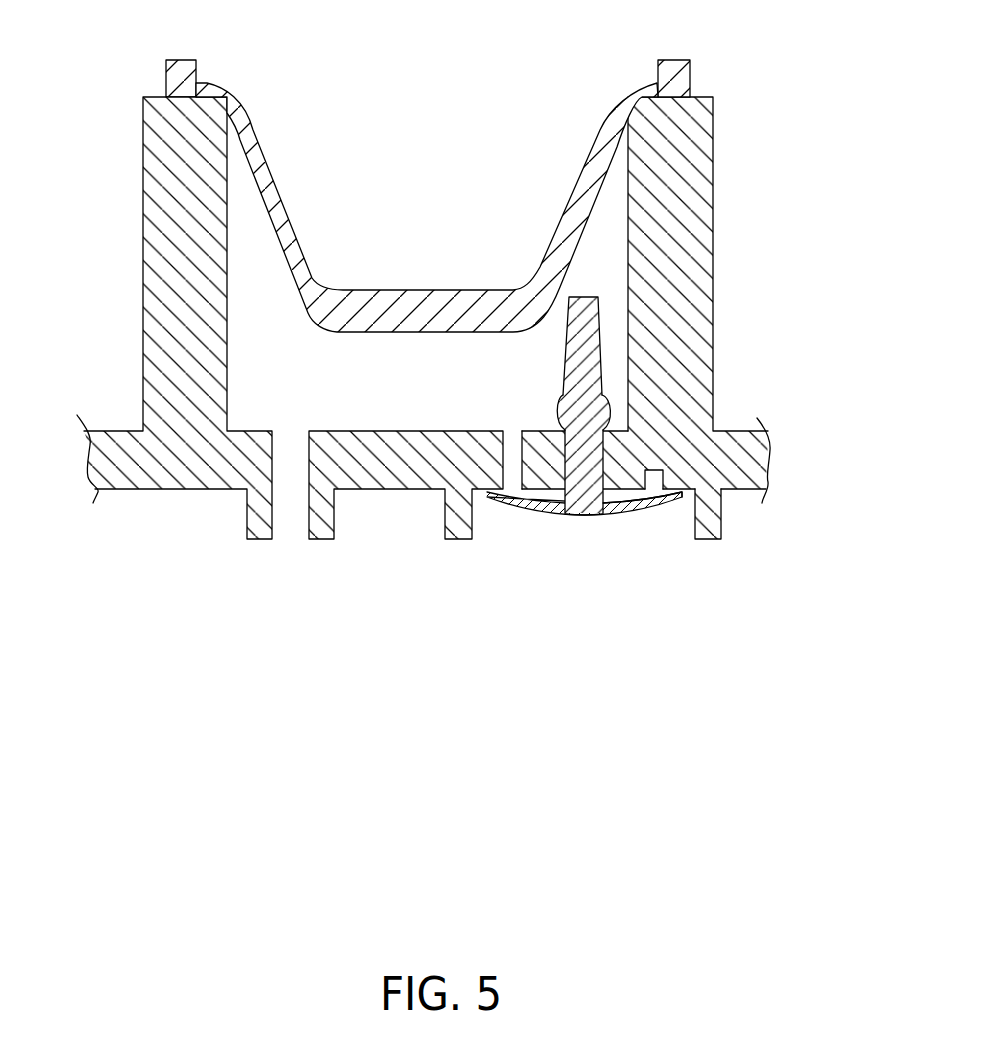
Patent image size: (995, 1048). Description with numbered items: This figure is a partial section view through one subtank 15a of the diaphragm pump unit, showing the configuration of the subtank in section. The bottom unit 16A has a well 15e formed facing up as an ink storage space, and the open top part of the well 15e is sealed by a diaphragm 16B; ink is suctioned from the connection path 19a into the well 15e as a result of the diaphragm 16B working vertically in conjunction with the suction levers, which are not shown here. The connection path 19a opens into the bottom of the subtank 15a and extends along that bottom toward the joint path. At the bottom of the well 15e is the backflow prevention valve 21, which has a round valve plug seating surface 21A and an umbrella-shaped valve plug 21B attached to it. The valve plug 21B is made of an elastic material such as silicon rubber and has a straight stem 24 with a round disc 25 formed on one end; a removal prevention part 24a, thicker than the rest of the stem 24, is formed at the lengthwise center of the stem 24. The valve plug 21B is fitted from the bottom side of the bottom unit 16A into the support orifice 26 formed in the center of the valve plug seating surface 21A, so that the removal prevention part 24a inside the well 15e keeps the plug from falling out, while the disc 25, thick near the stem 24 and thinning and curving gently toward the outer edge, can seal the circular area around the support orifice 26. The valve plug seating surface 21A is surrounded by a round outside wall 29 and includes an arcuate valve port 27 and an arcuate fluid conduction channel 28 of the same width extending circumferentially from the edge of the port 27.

The subtank 15a is at (321, 99).
The well 15e is at (385, 391).
The bottom unit 16A is at (718, 194).
The diaphragm 16B is at (462, 288).
The connection path 19a is at (288, 517).
The backflow prevention valve 21 is at (707, 623).
The valve plug seating surface 21A is at (630, 480).
The valve plug 21B is at (582, 521).
The stem 24 is at (599, 332).
The removal prevention part 24a is at (609, 411).
The disc 25 is at (540, 515).
The support orifice 26 is at (605, 465).
The valve port 27 is at (508, 447).
The fluid conduction channel 28 is at (664, 473).
The outside wall 29 is at (720, 525).